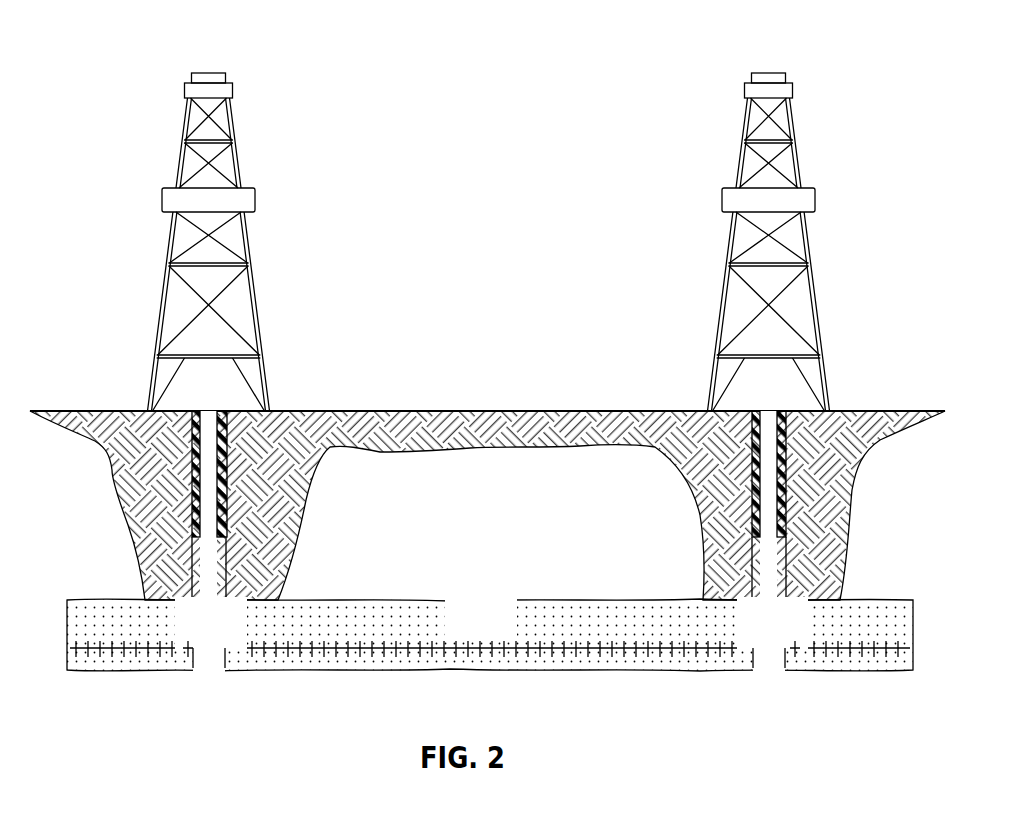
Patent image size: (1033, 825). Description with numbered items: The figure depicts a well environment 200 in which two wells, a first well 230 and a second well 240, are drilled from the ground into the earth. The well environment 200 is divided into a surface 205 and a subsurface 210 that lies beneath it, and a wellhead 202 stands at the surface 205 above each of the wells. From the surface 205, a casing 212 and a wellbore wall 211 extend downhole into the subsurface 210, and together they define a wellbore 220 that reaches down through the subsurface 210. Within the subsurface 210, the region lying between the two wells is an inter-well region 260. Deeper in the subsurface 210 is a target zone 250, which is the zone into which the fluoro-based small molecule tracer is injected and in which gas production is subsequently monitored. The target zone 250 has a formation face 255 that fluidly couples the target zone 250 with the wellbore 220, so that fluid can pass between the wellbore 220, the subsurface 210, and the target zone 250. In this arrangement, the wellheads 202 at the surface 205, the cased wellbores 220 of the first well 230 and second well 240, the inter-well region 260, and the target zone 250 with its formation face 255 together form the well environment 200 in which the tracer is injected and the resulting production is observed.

The well environment 200 is at (236, 40).
The wellhead 202 is at (162, 205).
The surface 205 is at (467, 398).
The subsurface 210 is at (120, 477).
The wellbore wall 211 is at (238, 448).
The casing 212 is at (210, 478).
The wellbore 220 is at (490, 541).
The first well 230 is at (210, 450).
The second well 240 is at (765, 437).
The target zone 250 is at (99, 656).
The formation face 255 is at (188, 658).
The inter-well region 260 is at (477, 613).